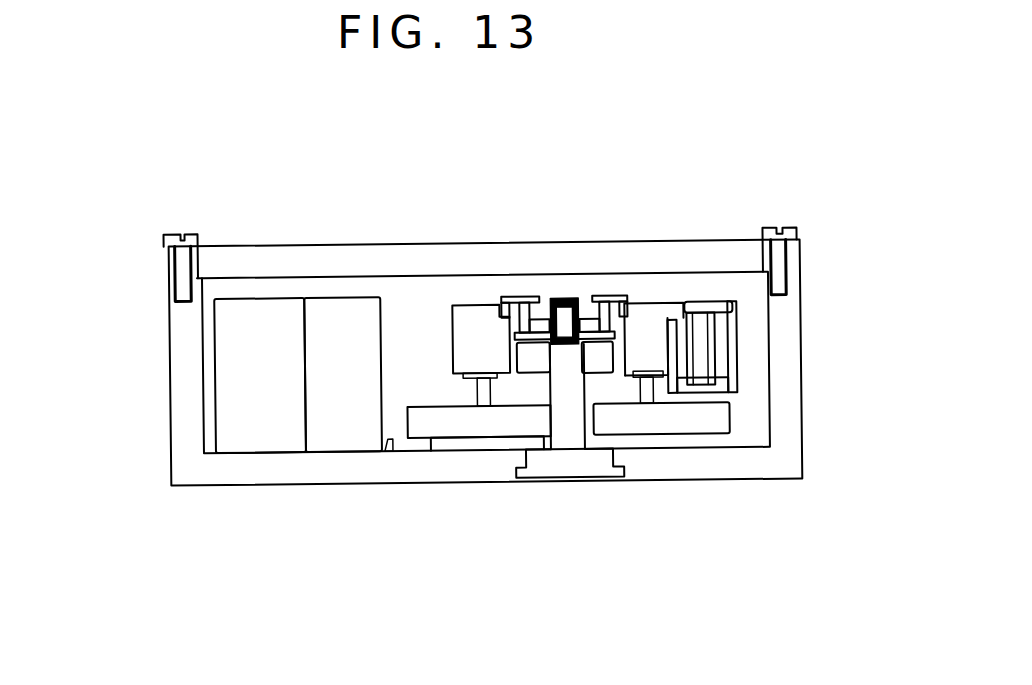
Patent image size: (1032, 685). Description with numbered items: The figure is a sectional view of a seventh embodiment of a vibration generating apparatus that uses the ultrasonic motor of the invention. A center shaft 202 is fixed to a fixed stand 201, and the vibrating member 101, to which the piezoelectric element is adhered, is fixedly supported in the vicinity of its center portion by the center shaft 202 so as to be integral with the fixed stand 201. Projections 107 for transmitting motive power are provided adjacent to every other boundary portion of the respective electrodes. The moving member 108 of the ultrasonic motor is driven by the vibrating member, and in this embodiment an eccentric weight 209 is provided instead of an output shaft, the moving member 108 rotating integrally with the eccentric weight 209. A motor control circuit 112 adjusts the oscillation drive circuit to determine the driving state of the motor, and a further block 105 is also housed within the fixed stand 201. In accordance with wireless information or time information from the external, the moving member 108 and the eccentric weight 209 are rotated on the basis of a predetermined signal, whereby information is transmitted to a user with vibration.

The vibrating member 101 is at (753, 413).
The block 105 is at (409, 300).
The projections 107 is at (417, 450).
The moving member 108 is at (684, 276).
The motor control circuit 112 is at (276, 301).
The fixed stand 201 is at (484, 406).
The center shaft 202 is at (548, 450).
The eccentric weight 209 is at (790, 345).